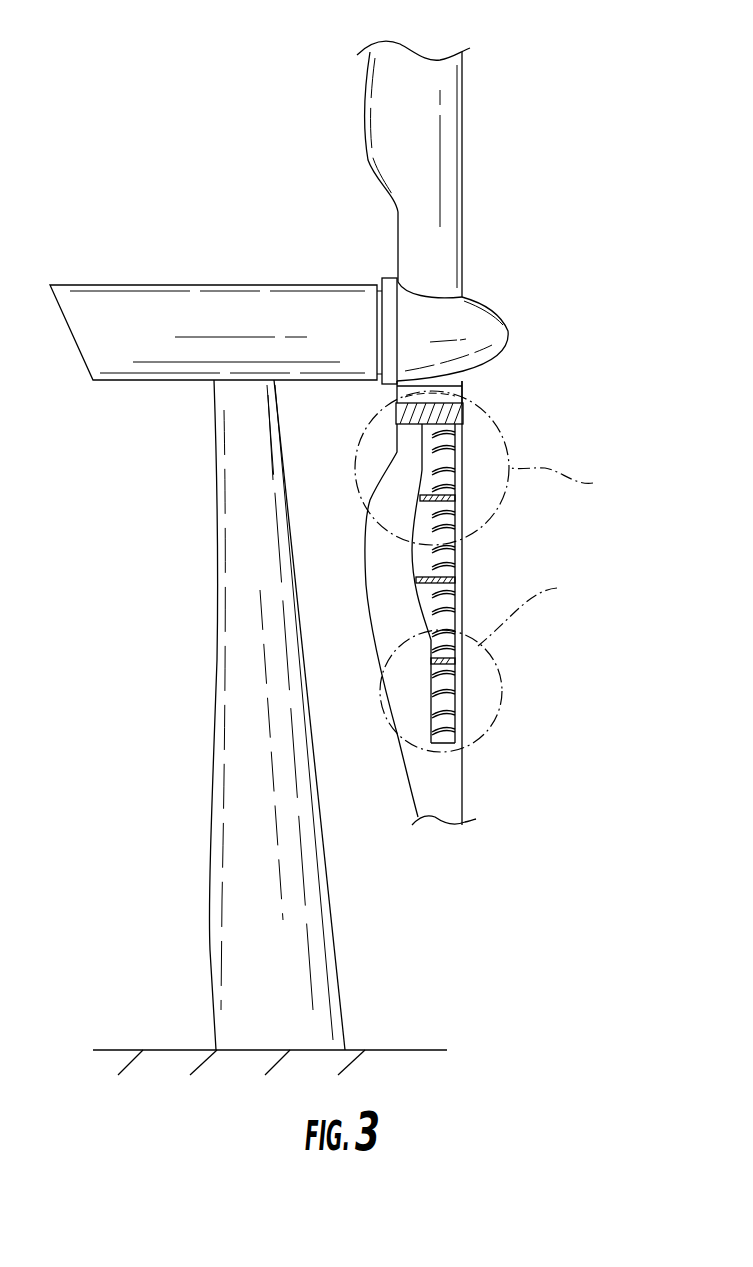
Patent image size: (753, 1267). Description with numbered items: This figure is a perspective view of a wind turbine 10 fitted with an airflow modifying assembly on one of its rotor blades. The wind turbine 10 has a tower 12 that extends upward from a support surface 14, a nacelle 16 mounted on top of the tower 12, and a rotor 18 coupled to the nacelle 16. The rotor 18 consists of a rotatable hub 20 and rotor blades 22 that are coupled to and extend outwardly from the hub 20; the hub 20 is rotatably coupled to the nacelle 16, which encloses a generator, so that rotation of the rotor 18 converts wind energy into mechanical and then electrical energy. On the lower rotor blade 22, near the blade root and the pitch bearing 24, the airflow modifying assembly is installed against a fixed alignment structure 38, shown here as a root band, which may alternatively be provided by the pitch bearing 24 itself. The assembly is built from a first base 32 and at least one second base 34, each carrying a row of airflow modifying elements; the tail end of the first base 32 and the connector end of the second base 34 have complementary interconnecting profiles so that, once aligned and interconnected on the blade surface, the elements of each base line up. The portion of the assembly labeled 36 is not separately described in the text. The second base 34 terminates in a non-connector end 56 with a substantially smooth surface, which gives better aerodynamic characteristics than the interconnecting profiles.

The wind turbine 10 is at (642, 106).
The tower 12 is at (220, 663).
The support surface 14 is at (177, 1050).
The nacelle 16 is at (237, 299).
The rotor 18 is at (507, 283).
The rotatable hub 20 is at (498, 315).
The rotor blade 22 is at (457, 145).
The pitch bearing 24 is at (500, 352).
The first base 32 is at (450, 467).
The second base 34 is at (450, 522).
The lightning conductor coil (lower portion) 36 is at (490, 692).
The alignment structure 38 is at (463, 406).
The non-connector end 56 is at (445, 745).